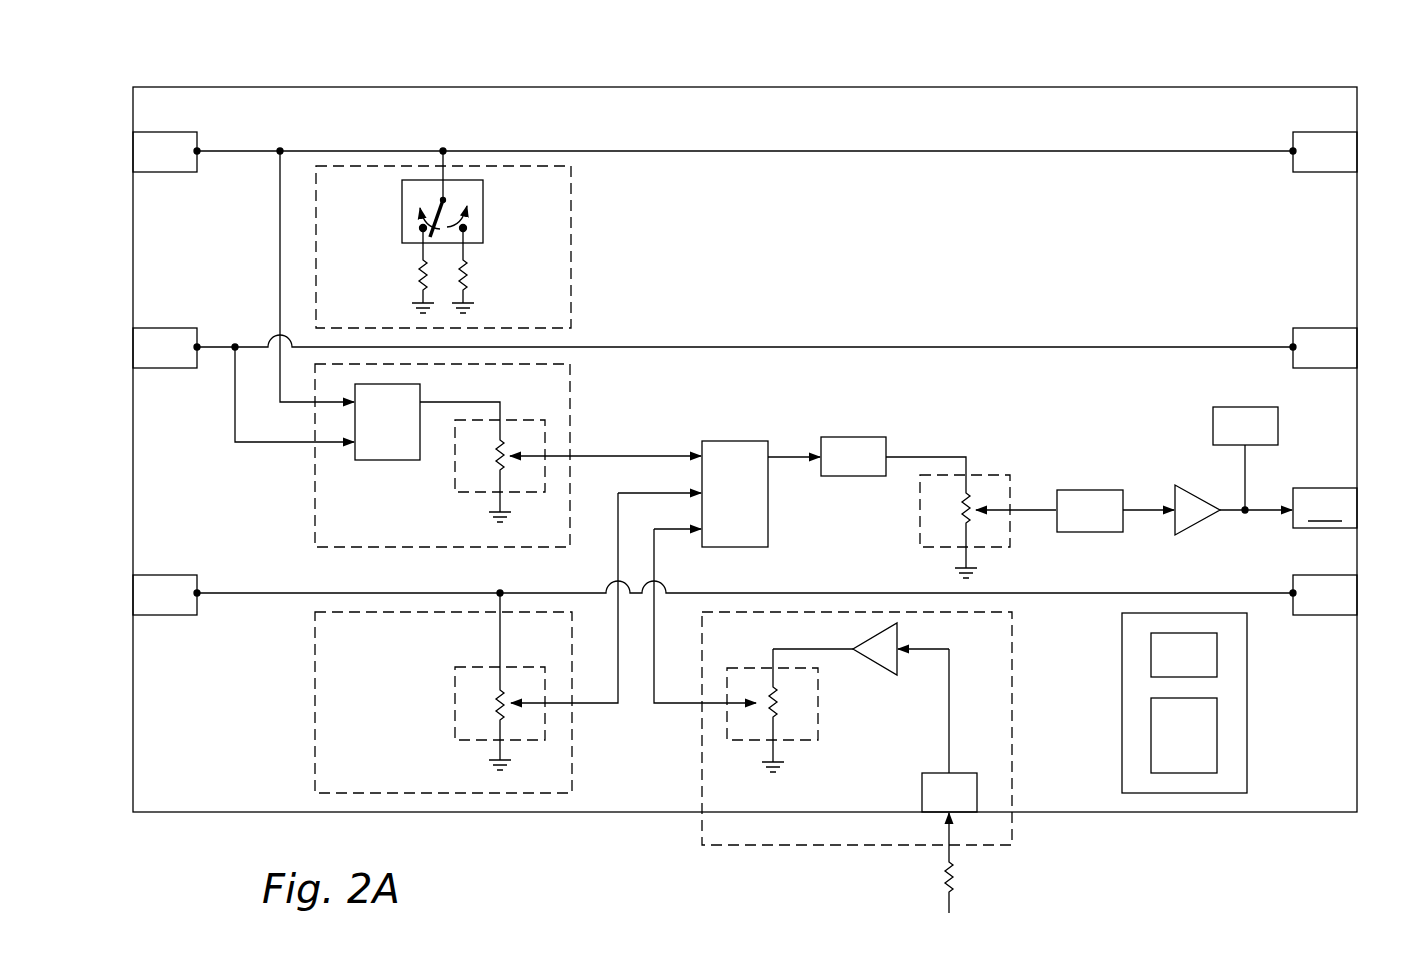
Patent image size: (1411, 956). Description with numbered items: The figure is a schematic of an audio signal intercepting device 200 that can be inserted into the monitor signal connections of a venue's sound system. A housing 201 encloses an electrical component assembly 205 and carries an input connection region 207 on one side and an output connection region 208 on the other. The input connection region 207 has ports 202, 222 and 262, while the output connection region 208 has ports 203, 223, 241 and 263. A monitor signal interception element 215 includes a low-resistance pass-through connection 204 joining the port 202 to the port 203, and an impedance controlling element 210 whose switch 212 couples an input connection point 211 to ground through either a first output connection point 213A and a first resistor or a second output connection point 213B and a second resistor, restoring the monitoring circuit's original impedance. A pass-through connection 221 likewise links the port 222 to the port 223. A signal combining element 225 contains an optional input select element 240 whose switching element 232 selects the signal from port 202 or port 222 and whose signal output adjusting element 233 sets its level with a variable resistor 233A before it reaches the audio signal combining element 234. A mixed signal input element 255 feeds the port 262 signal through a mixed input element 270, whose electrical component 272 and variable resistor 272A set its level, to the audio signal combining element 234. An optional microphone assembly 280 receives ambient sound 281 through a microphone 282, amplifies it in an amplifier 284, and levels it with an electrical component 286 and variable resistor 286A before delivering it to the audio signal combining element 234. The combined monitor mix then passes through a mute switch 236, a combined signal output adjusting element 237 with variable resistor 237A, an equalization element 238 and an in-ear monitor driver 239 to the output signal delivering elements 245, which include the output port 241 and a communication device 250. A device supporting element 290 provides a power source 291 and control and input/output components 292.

The audio signal intercepting device 200 is at (1272, 870).
The housing 201 is at (218, 812).
The port 202 is at (148, 165).
The port 203 is at (1308, 165).
The pass-through connection 204 is at (823, 151).
The electrical component assembly 205 is at (1090, 122).
The input connection region 207 is at (112, 112).
The output connection region 208 is at (1374, 113).
The impedance controlling element 210 is at (571, 276).
The input connection point 211 is at (440, 201).
The switch 212 is at (485, 190).
The first output connection point 213A is at (418, 228).
The second output connection point 213B is at (468, 228).
The monitor signal interception element 215 is at (245, 272).
The pass-through connection 221 is at (822, 347).
The port 222 is at (148, 361).
The port 223 is at (1308, 361).
The signal combining element 225 is at (248, 523).
The switching element 232 is at (370, 431).
The signal output adjusting element 233 is at (475, 492).
The variable resistor 233A is at (488, 463).
The audio signal combining element 234 is at (718, 506).
The mute switch 236 is at (836, 469).
The combined signal output adjusting element 237 is at (995, 474).
The variable resistor 237A is at (940, 510).
The equalization element 238 is at (1073, 523).
The in-ear monitor driver 239 is at (1197, 525).
The input select element 240 is at (571, 372).
The output port 241 is at (822, 593).
The output signal delivering element 245 is at (1328, 428).
The communication device 250 is at (1228, 439).
The mixed signal input element 255 is at (247, 752).
The port 262 is at (148, 607).
The port 263 is at (1308, 607).
The mixed input element 270 is at (315, 641).
The electrical component 272 is at (455, 687).
The variable resistor 272A is at (485, 705).
The microphone assembly 280 is at (1012, 643).
The ambient sound 281 is at (957, 878).
The microphone 282 is at (932, 805).
The amplifier 284 is at (878, 667).
The electrical component 286 is at (803, 742).
The variable resistor 286A is at (790, 708).
The device supporting element 290 is at (1247, 736).
The power source 291 is at (1167, 748).
The control and input/output components 292 is at (1167, 668).